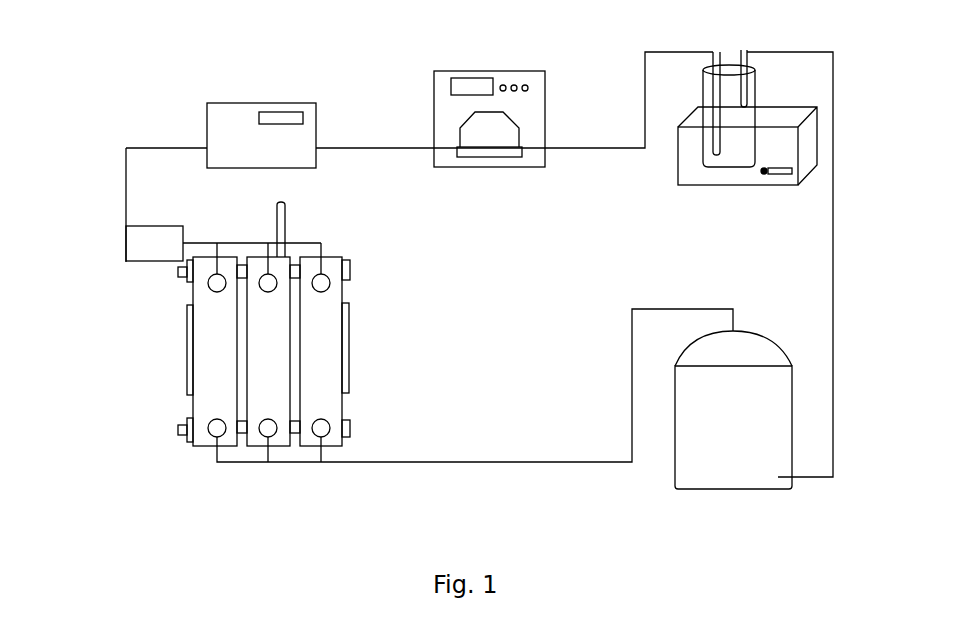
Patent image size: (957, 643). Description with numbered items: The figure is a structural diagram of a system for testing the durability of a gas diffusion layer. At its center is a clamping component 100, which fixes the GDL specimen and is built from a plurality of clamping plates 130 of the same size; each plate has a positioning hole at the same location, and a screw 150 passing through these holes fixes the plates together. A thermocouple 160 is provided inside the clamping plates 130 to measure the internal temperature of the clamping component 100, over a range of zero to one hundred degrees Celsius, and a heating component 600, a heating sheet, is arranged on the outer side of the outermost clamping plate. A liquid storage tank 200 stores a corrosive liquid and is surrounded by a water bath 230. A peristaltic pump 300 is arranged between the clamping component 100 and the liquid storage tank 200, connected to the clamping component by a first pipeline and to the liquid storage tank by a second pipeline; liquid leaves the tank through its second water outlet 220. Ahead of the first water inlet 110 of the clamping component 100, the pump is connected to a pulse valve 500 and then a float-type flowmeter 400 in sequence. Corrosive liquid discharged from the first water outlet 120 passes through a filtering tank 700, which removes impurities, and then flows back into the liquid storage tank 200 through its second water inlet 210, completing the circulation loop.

The clamping component 100 is at (283, 412).
The first water inlet 110 is at (206, 280).
The first water outlet 120 is at (216, 437).
The clamping plate 130 is at (343, 440).
The screw 150 is at (350, 272).
The thermocouple 160 is at (280, 228).
The liquid storage tank 200 is at (758, 97).
The second water inlet 210 is at (758, 45).
The second water outlet 220 is at (713, 55).
The water bath 230 is at (813, 147).
The peristaltic pump 300 is at (445, 103).
The float-type flowmeter 400 is at (126, 242).
The pulse valve 500 is at (220, 113).
The heating component 600 is at (187, 355).
The filtering tank 700 is at (763, 477).